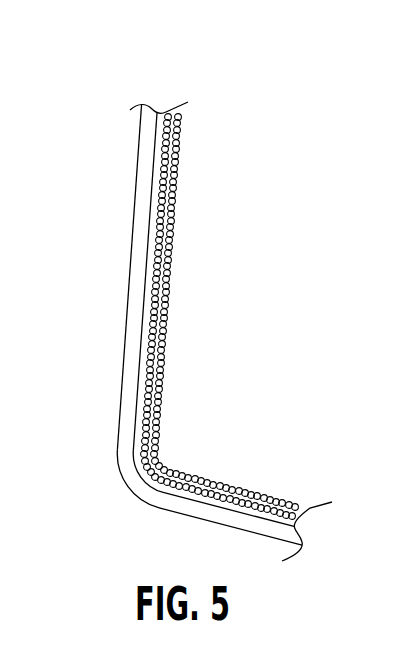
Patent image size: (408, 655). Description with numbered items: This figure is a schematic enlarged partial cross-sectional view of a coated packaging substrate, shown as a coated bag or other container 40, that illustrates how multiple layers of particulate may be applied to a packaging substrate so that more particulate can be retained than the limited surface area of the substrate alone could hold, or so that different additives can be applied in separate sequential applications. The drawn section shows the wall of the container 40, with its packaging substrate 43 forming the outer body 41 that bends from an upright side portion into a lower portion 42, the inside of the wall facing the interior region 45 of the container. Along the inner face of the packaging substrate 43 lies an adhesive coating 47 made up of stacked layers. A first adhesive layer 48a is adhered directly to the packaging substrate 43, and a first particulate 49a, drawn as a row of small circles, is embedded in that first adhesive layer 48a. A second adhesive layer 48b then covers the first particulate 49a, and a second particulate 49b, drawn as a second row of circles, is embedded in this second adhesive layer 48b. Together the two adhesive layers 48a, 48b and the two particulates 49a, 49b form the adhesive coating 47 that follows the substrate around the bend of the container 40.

The coated bag or other container 40 is at (275, 104).
The panel body 41 is at (104, 386).
The bottom wall portion 42 is at (235, 522).
The packaging substrate 43 is at (128, 290).
The interior cavity 45 is at (264, 333).
The adhesive coating 47 is at (206, 101).
The first adhesive layer 48a is at (161, 172).
The second adhesive layer 48b is at (160, 203).
The first particulate 49a is at (170, 172).
The second particulate 49b is at (170, 218).